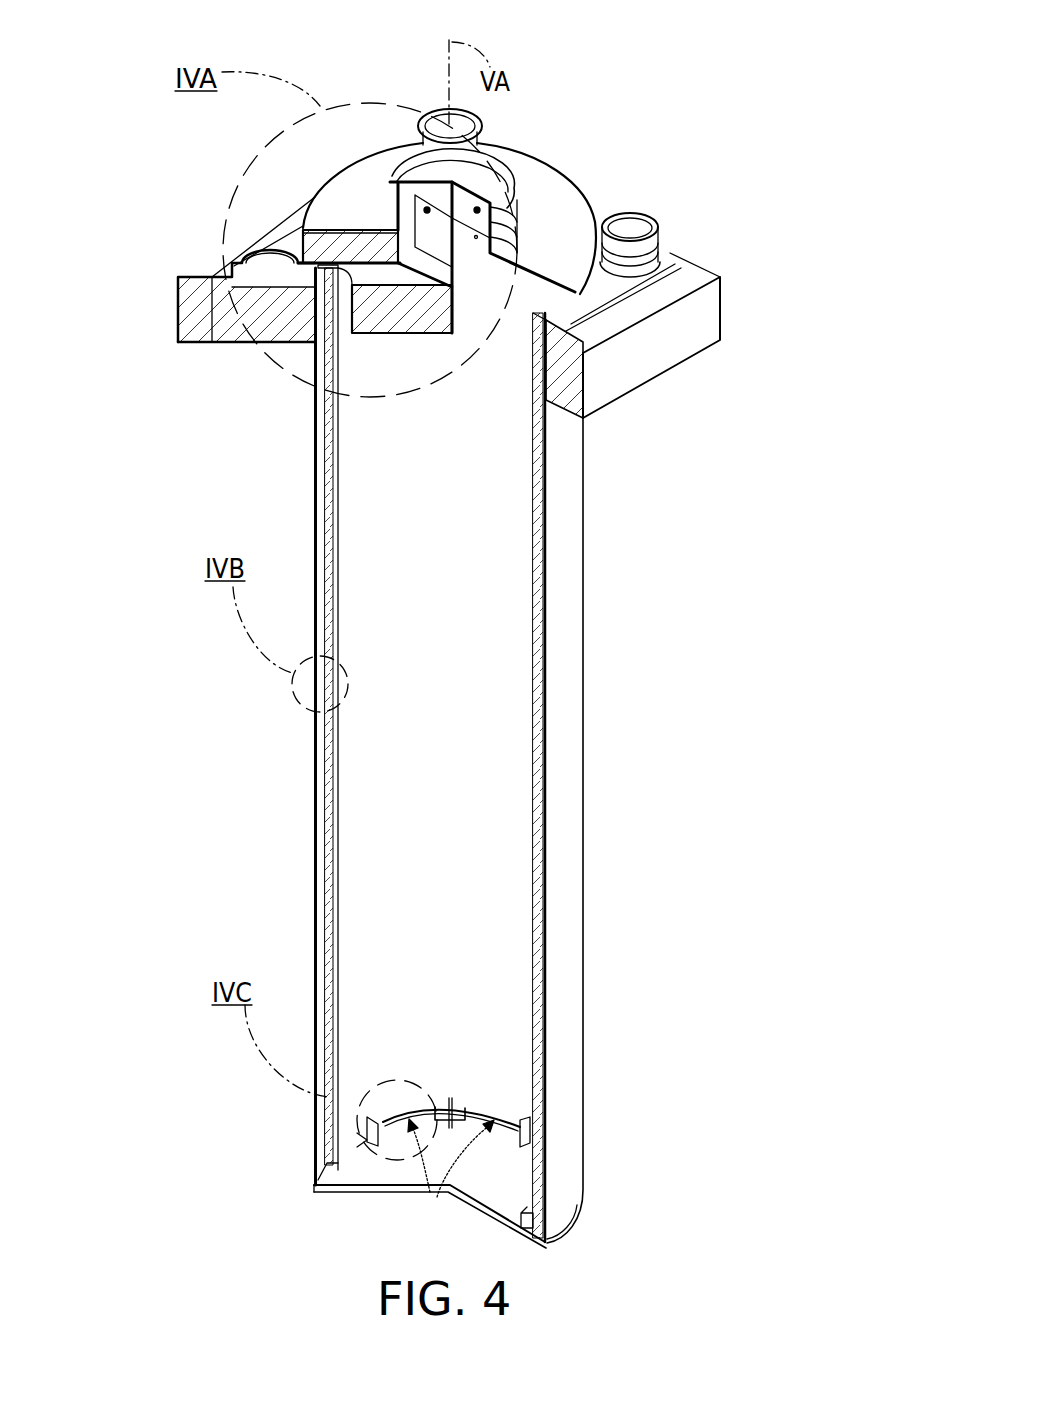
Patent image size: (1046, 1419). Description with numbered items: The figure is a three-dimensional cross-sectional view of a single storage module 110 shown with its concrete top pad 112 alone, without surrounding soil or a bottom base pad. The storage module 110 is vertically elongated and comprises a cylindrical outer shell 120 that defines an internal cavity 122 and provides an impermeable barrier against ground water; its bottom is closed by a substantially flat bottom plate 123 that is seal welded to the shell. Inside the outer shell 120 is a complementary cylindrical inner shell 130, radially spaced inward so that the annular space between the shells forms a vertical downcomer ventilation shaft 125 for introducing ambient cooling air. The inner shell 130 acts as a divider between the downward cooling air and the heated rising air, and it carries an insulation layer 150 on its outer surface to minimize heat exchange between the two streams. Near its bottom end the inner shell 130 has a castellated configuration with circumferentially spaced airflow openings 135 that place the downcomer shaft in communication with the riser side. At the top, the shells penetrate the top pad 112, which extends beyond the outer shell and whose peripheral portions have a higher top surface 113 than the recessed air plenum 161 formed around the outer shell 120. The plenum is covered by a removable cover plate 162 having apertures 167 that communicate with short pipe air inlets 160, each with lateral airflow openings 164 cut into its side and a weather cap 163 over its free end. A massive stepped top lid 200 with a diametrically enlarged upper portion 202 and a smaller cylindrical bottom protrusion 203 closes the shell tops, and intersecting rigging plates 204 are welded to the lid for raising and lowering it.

The storage module 110 is at (808, 82).
The top pad 112 is at (712, 327).
The top surface 113 is at (178, 276).
The outer shell 120 is at (568, 685).
The internal cavity 122 is at (532, 828).
The bottom plate 123 is at (365, 1178).
The downcomer ventilation shaft 125 is at (322, 848).
The inner shell 130 is at (533, 672).
The airflow openings 135 is at (449, 1175).
The insulation layer 150 is at (325, 815).
The air inlets 160 is at (672, 222).
The air plenum 161 is at (272, 290).
The cover plate 162 is at (293, 240).
The weather cap 163 is at (637, 225).
The lateral airflow openings 164 is at (658, 258).
The apertures 167 is at (187, 258).
The top lid 200 is at (335, 156).
The upper portion 202 is at (532, 167).
The bottom protrusion 203 is at (402, 315).
The rigging plates 204 is at (503, 280).